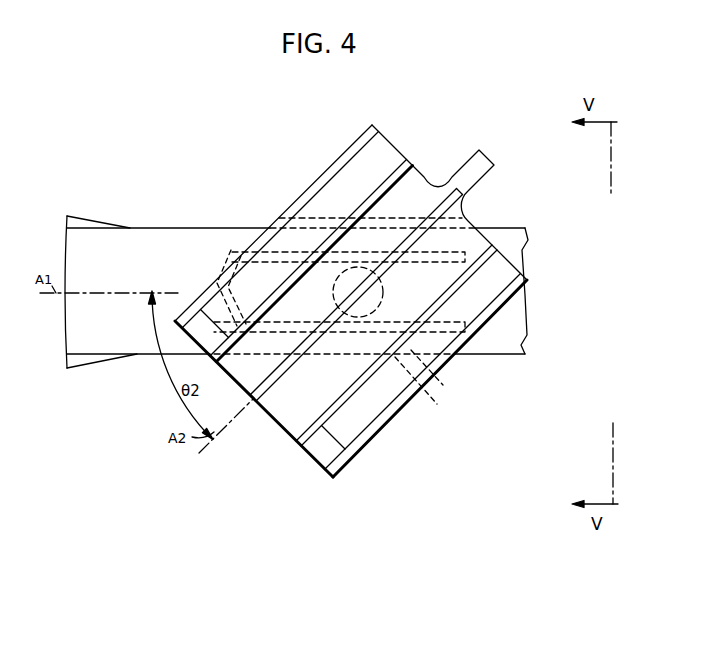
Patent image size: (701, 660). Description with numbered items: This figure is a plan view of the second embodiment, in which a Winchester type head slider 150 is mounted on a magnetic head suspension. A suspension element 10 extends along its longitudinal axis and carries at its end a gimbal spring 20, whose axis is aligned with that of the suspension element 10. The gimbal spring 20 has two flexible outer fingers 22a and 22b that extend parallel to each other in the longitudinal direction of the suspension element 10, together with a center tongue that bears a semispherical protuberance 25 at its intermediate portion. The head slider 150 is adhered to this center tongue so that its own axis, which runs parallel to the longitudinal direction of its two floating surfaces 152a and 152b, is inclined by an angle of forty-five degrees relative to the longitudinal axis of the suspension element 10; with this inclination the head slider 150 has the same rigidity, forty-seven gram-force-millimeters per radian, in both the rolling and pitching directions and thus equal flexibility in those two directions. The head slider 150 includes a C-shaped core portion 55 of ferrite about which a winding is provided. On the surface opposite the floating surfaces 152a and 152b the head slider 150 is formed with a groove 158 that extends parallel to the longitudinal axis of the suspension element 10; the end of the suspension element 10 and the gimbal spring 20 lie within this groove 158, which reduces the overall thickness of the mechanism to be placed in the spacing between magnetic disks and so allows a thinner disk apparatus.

The suspension element 10 is at (73, 219).
The gimbal spring 20 is at (143, 252).
The flexible outer finger 22a is at (273, 235).
The flexible outer finger 22b is at (440, 370).
The semispherical protuberance 25 is at (380, 292).
The C-shaped core portion 55 is at (482, 173).
The head slider 150 is at (265, 412).
The floating surface 152a is at (383, 155).
The floating surface 152b is at (373, 405).
The groove 158 is at (426, 346).